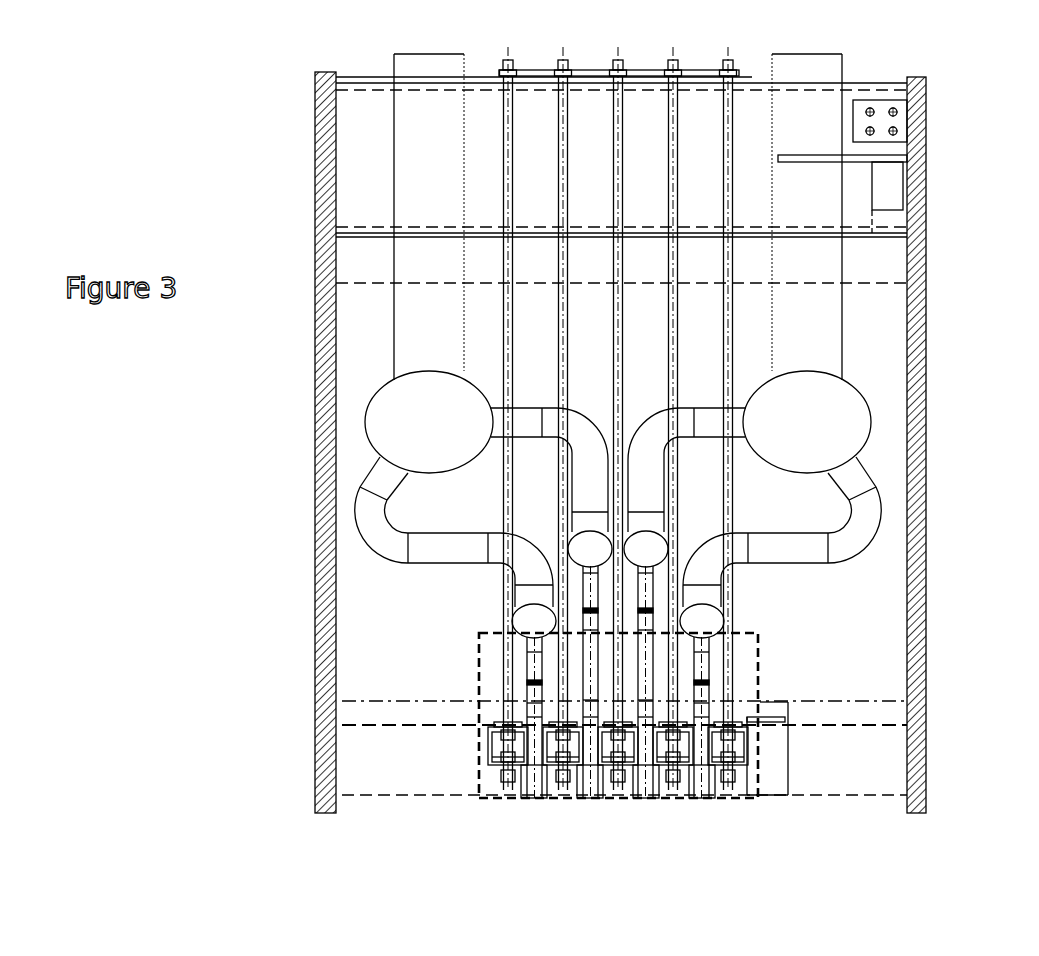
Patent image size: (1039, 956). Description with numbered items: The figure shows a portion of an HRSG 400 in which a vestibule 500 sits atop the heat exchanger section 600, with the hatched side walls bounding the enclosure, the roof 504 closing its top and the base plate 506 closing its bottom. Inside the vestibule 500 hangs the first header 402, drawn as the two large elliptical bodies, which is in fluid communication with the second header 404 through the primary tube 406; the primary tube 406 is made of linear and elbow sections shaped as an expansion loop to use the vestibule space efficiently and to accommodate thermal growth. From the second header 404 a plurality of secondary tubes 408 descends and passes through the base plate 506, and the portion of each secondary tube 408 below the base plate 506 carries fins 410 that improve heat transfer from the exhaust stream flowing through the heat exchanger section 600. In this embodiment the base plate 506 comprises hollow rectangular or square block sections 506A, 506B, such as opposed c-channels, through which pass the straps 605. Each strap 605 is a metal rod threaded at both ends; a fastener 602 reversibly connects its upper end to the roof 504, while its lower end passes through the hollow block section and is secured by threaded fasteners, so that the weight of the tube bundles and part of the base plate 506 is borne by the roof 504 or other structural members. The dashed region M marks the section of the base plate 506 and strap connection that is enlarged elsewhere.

The HRSG 400 is at (265, 445).
The first header 402 is at (847, 402).
The second header 404 is at (712, 617).
The primary tube 406 is at (862, 477).
The secondary tube 408 is at (703, 697).
The fins 410 is at (708, 788).
The vestibule 500 is at (410, 673).
The roof 504 is at (878, 84).
The base plate 506 is at (646, 779).
The hollow block section 506A is at (498, 750).
The hollow block section 506B is at (577, 757).
The heat exchanger section 600 is at (414, 783).
The fastener 602 is at (741, 74).
The strap 605 is at (728, 653).
The detail region M is at (482, 632).